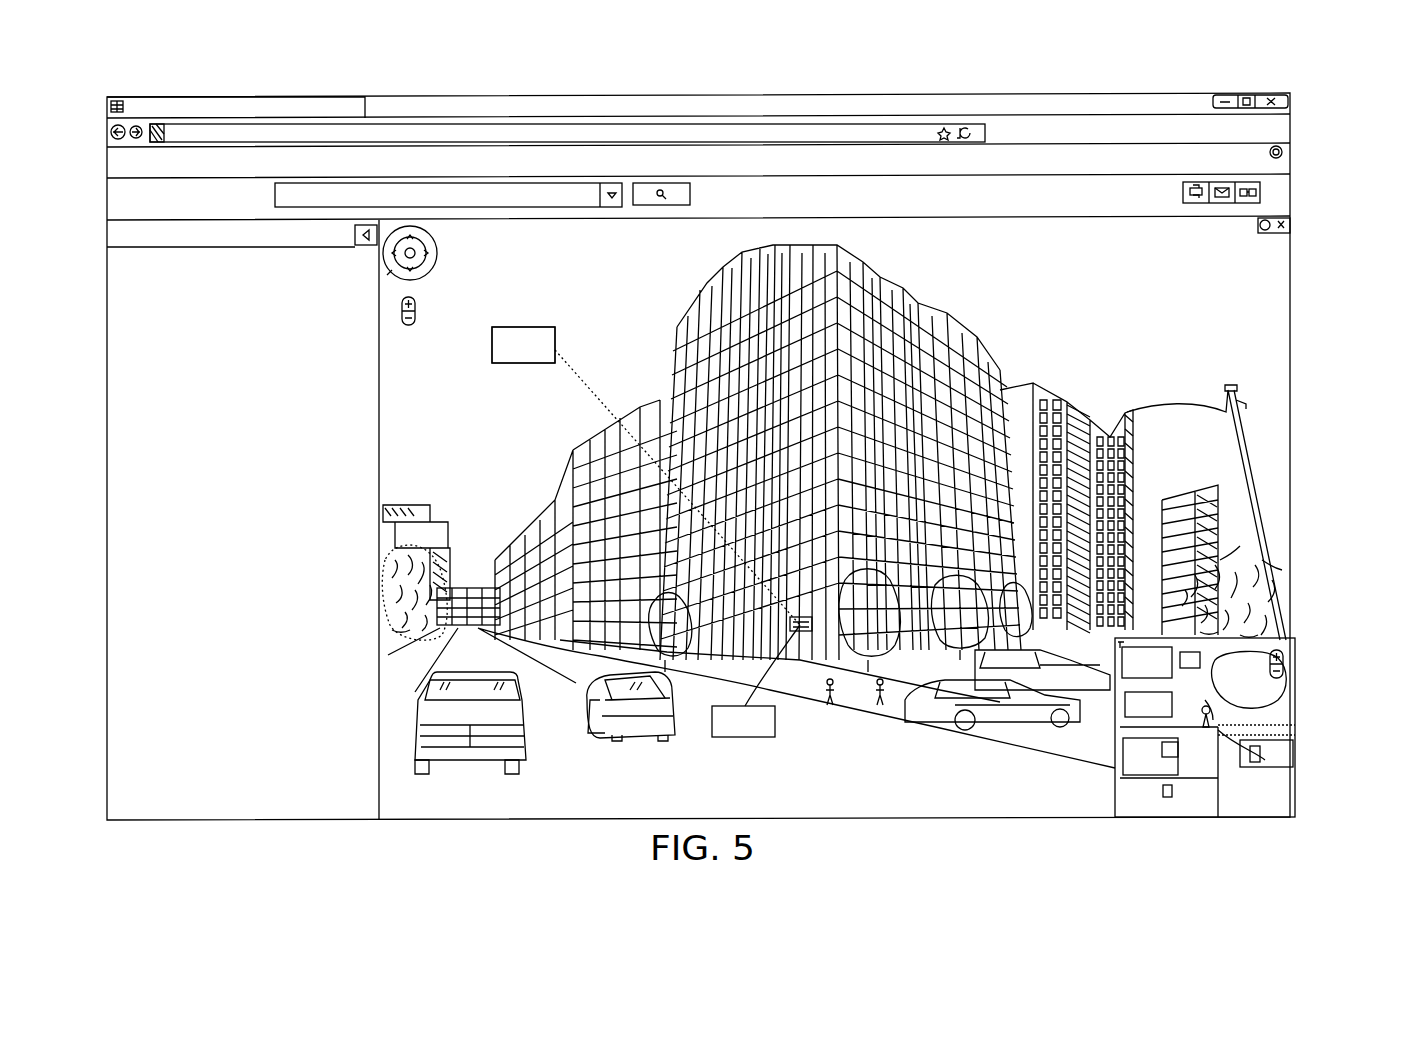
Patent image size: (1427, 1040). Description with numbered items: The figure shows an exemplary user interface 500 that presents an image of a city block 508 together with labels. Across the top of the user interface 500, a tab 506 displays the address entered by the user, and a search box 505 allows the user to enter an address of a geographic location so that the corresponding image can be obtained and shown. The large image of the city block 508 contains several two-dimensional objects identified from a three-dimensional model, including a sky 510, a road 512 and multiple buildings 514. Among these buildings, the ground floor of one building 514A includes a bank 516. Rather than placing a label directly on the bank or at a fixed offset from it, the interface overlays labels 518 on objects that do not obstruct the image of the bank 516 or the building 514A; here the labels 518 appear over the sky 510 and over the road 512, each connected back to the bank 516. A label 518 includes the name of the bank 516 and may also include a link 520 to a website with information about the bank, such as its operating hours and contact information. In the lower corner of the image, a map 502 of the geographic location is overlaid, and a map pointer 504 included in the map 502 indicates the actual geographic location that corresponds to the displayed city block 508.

The user interface 500 is at (743, 445).
The map 502 is at (1247, 746).
The map pointer 504 is at (1248, 777).
The search box 505 is at (545, 185).
The tab 506 is at (318, 100).
The city block 508 is at (881, 543).
The sky 510 is at (1233, 268).
The road 512 is at (591, 758).
The buildings 514 is at (1150, 447).
The building 514A is at (905, 287).
The bank 516 is at (795, 632).
The labels 518 is at (537, 327).
The link 520 is at (515, 363).